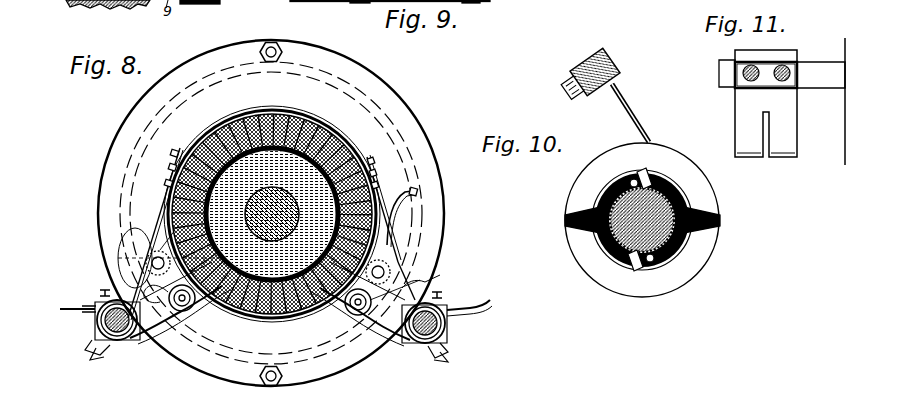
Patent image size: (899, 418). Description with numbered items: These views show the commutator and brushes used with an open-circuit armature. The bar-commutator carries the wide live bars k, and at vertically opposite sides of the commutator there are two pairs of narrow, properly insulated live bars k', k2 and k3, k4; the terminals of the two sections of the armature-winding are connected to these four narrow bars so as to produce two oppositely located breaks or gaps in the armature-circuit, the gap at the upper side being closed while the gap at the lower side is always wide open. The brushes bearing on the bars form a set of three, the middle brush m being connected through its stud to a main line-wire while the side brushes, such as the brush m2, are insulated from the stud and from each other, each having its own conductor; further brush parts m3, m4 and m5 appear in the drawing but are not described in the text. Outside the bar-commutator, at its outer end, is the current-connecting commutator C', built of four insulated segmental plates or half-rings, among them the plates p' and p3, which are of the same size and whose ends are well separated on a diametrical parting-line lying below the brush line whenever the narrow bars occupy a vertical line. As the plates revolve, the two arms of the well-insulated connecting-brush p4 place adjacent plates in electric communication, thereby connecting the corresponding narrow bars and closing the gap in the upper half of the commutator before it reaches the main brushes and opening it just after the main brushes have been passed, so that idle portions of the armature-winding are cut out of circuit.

In FIG. 8, the live commutator-bar k is at (272, 202).
In FIG. 8, the narrow live bar k' is at (262, 100).
In FIG. 8, the narrow live bar k2 is at (284, 118).
In FIG. 8, the narrow live bar k3 is at (256, 312).
In FIG. 8, the narrow live bar k4 is at (282, 312).
In FIG. 8, the middle brush m is at (372, 172).
In FIG. 8, the side brush m2 is at (370, 159).
In FIG. 8, the brush m3 is at (169, 168).
In FIG. 8, the brush m4 is at (165, 184).
In FIG. 8, the brush m5 is at (171, 154).
In FIG. 10, the current-connecting commutator C' is at (642, 209).
In FIG. 10, the segmental plate p' is at (654, 206).
In FIG. 10, the segmental plate p3 is at (656, 276).
In FIG. 10, the connecting-brush p4 is at (620, 112).
In FIG. 11, the connecting-brush p4 is at (766, 103).